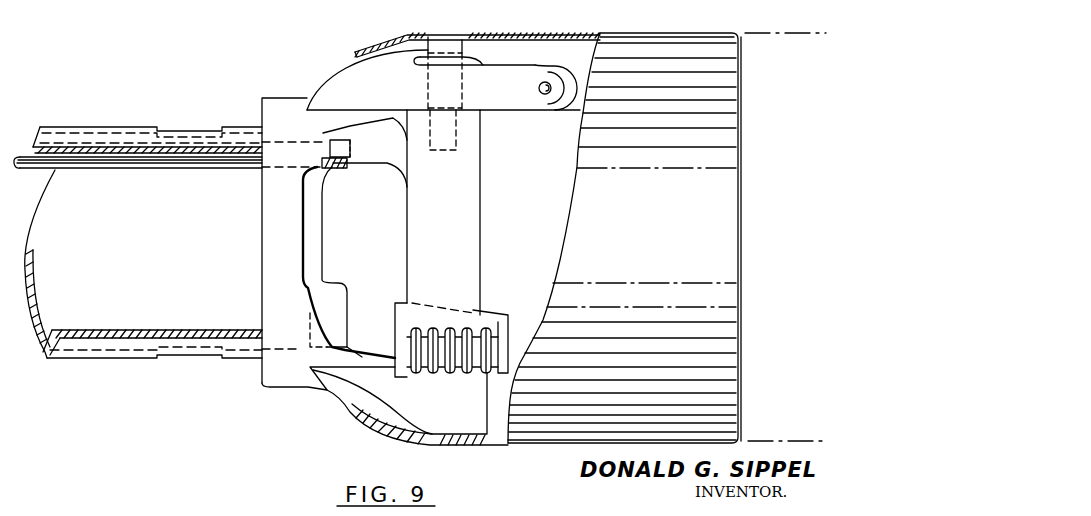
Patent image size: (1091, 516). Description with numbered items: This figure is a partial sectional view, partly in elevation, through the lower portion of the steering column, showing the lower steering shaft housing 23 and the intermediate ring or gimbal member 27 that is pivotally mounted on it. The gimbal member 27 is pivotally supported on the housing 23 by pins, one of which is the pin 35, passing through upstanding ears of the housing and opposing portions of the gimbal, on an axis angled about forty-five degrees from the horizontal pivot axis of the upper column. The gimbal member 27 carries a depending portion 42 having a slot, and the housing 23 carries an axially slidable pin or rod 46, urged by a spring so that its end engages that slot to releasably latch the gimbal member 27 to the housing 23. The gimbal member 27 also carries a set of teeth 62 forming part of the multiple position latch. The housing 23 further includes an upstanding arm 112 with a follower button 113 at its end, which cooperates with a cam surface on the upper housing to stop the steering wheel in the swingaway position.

The lower steering shaft housing 23 is at (343, 78).
The pin 35 is at (455, 53).
The upstanding arm 112 is at (518, 80).
The follower button 113 is at (540, 97).
The depending portion 42 is at (367, 147).
The axially slidable pin or rod 46 is at (330, 170).
The intermediate ring or gimbal member 27 is at (467, 235).
The set of teeth 62 is at (443, 372).